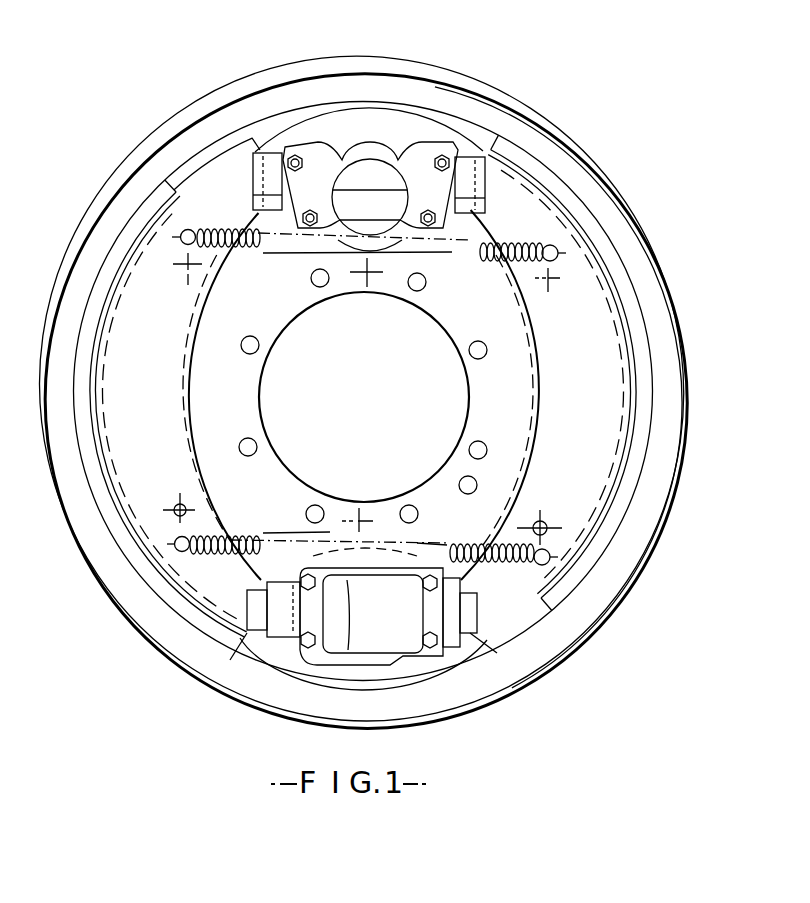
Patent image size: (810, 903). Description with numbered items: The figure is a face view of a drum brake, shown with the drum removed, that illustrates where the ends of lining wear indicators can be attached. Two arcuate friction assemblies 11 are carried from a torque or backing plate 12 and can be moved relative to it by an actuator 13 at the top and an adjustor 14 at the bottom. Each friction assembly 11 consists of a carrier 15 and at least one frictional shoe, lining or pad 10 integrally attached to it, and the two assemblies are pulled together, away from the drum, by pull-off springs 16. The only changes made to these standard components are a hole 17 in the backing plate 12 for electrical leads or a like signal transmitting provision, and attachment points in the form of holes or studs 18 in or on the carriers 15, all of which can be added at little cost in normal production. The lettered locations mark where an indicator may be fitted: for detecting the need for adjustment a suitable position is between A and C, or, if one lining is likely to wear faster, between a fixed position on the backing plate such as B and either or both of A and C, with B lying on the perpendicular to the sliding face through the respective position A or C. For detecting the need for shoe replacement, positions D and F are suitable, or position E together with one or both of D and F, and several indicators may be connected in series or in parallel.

The frictional shoe, lining or pad 10 is at (87, 452).
The arcuate friction assembly 11 is at (203, 318).
The torque or backing plate 12 is at (252, 398).
The actuator 13 is at (366, 172).
The adjustor 14 is at (401, 583).
The carrier 15 is at (200, 445).
The pull-off spring 16 is at (443, 256).
The hole for electrical leads 17 is at (457, 482).
The holes or studs 18 is at (177, 503).
The position A is at (181, 272).
The position B is at (369, 275).
The position C is at (552, 283).
The position D is at (173, 515).
The position E is at (363, 524).
The position F is at (546, 530).